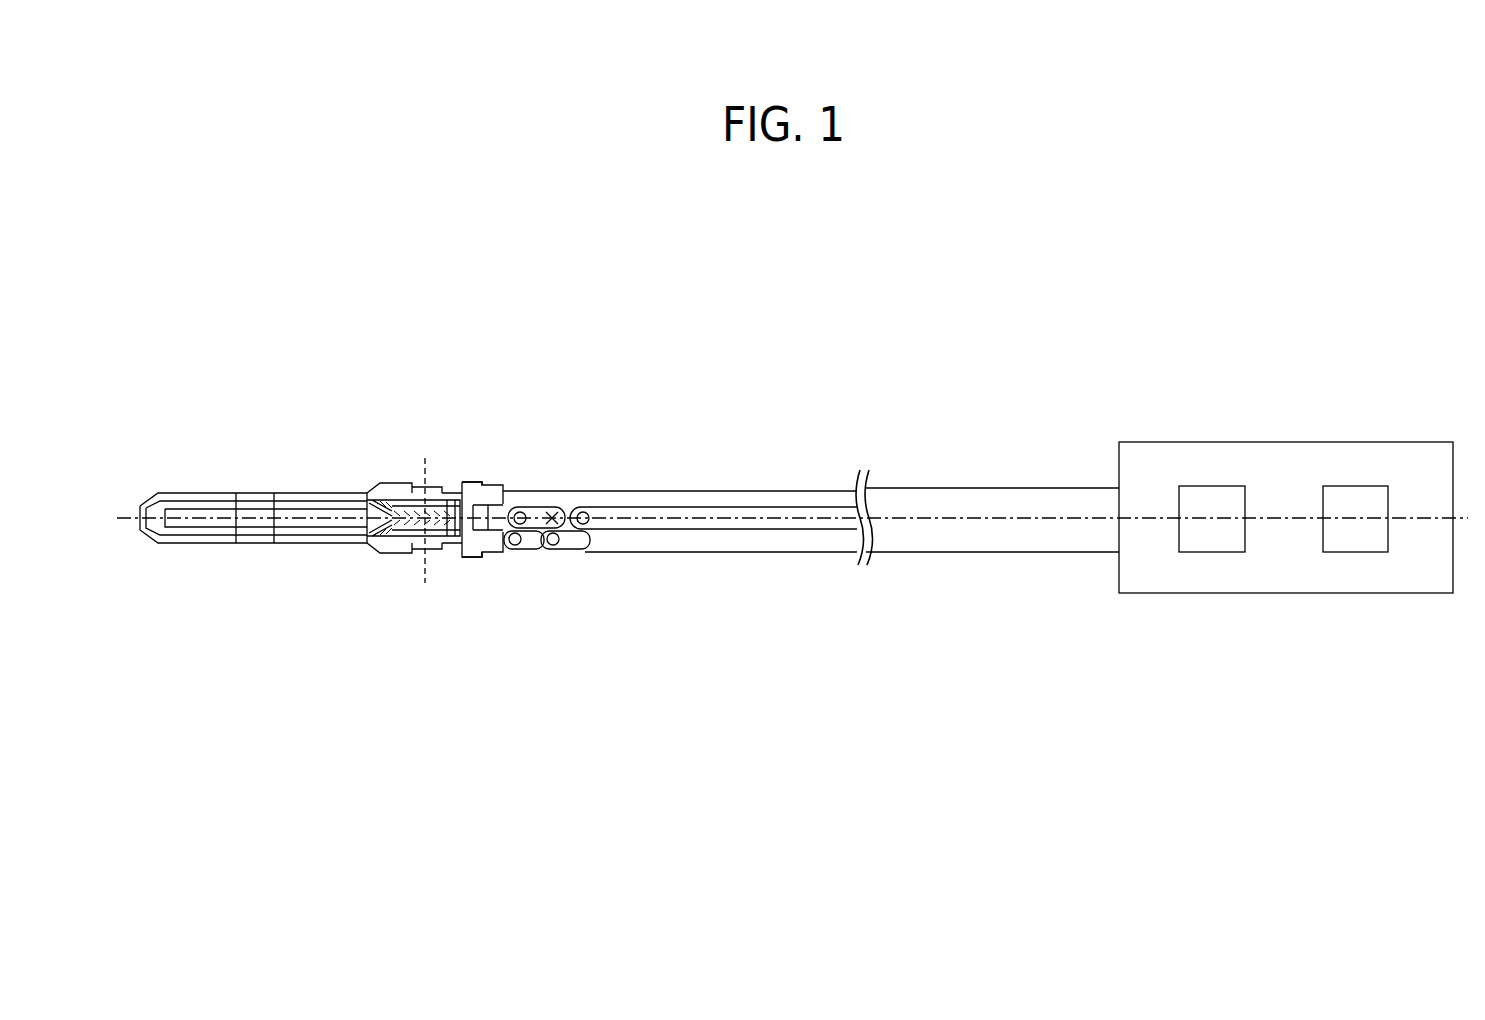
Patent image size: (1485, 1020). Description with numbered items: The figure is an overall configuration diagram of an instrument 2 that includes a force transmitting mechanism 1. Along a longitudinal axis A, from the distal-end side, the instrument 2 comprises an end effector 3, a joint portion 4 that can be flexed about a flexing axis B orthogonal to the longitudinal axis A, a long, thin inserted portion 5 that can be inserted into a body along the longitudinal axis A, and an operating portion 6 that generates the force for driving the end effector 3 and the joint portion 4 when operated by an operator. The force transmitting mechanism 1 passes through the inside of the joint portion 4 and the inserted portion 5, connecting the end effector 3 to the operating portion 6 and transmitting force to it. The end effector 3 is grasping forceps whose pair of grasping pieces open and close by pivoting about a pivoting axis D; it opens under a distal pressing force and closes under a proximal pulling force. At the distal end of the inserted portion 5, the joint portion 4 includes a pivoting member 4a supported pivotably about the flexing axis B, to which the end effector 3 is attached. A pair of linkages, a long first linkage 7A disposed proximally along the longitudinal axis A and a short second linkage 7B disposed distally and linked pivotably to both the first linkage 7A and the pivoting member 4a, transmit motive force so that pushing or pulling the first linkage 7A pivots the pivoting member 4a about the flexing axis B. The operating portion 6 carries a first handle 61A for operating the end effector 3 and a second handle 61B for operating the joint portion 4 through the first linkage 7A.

The force transmitting mechanism 1 is at (695, 513).
The instrument 2 is at (468, 278).
The end effector 3 is at (145, 487).
The joint portion 4 is at (499, 451).
The pivoting member 4a is at (468, 481).
The inserted portion 5 is at (1003, 488).
The operating portion 6 is at (1286, 489).
The first handle 61A is at (1210, 553).
The second handle 61B is at (1352, 553).
The first linkage 7A is at (568, 548).
The second linkage 7B is at (527, 550).
The longitudinal axis A is at (782, 518).
The flexing axis B is at (552, 511).
The pivoting axis D is at (427, 502).